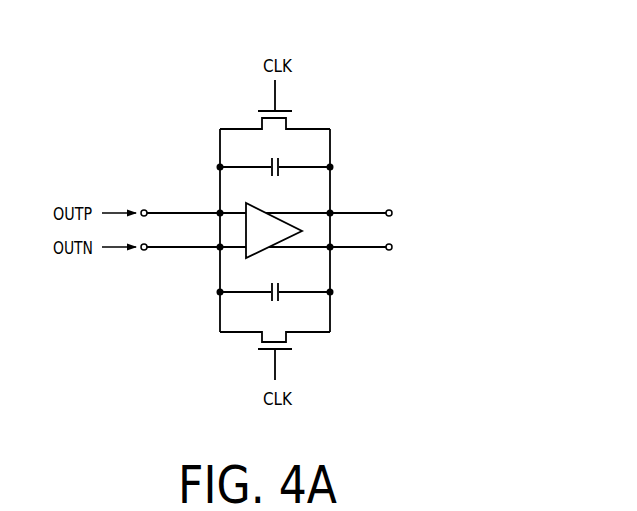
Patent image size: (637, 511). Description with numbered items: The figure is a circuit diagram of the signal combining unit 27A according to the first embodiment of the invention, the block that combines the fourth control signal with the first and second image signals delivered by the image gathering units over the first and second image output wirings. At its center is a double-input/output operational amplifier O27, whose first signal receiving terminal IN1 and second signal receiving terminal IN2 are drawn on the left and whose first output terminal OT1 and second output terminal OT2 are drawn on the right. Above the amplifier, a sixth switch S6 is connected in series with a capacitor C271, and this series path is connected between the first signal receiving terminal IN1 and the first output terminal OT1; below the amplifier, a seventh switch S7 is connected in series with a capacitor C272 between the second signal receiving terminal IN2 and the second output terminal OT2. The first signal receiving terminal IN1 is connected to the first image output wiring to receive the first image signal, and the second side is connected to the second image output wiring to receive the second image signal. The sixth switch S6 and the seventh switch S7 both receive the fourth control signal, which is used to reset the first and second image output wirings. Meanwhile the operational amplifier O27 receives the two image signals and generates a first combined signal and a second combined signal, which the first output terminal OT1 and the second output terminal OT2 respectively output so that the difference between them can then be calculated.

The signal combining unit 27A is at (398, 100).
The sixth switch S6 is at (275, 104).
The seventh switch S7 is at (275, 356).
The capacitor C271 is at (297, 174).
The capacitor C272 is at (297, 301).
The double-input/output operational amplifier O27 is at (294, 230).
The first signal receiving terminal IN1 is at (157, 202).
The second signal receiving terminal IN2 is at (158, 259).
The first output terminal OT1 is at (398, 201).
The second output terminal OT2 is at (399, 260).